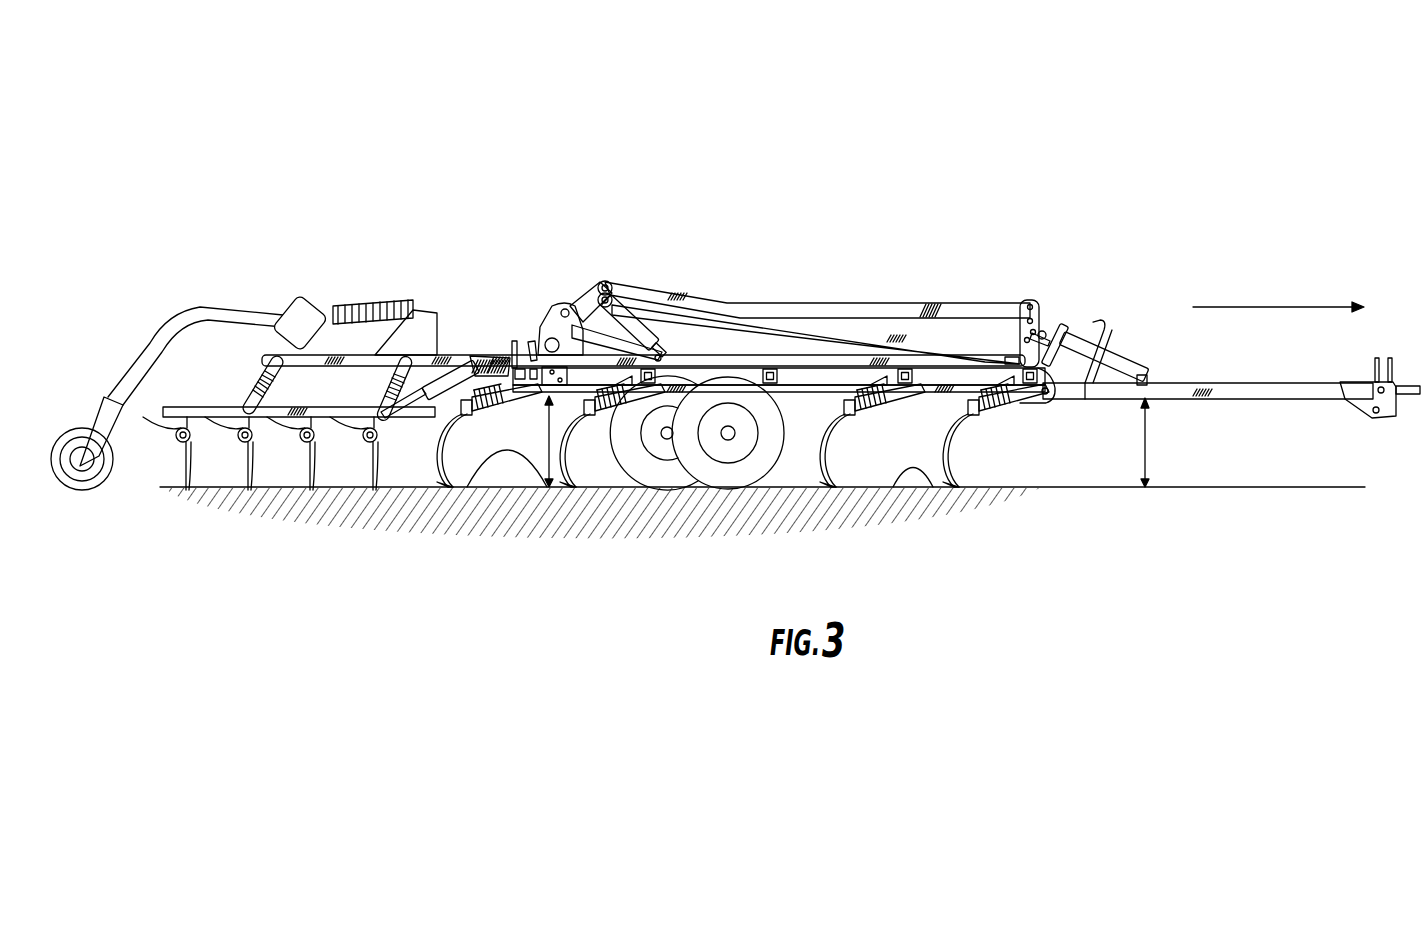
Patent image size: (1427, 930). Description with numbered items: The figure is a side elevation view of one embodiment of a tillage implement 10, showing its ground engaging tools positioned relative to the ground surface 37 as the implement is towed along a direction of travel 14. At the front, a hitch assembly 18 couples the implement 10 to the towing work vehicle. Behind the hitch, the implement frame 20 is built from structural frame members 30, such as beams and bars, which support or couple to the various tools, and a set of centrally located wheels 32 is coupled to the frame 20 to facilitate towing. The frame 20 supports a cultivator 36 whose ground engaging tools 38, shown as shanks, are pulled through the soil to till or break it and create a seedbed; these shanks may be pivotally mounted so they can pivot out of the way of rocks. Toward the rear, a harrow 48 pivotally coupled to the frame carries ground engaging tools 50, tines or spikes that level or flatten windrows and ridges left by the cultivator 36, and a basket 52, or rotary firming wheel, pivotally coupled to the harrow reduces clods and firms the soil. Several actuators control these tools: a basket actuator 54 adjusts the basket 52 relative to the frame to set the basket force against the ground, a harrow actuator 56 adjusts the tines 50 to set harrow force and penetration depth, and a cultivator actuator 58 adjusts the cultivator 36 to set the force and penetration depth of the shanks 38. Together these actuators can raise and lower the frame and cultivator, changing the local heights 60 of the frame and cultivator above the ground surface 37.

The tillage implement 10 is at (214, 172).
The direction of travel 14 is at (1280, 307).
The hitch assembly 18 is at (1272, 390).
The implement frame 20 is at (840, 352).
The structural frame members 30 is at (815, 390).
The centrally located wheels 32 is at (700, 462).
The cultivator 36 is at (977, 280).
The ground surface 37 is at (905, 488).
The ground engaging tools 38 is at (838, 436).
The harrows 48 is at (176, 463).
The ground engaging tools 50 is at (188, 490).
The baskets 52 is at (80, 430).
The basket actuator 54 is at (368, 305).
The harrow actuator 56 is at (422, 413).
The cultivator actuator 58 is at (648, 313).
The local heights 60 is at (546, 437).